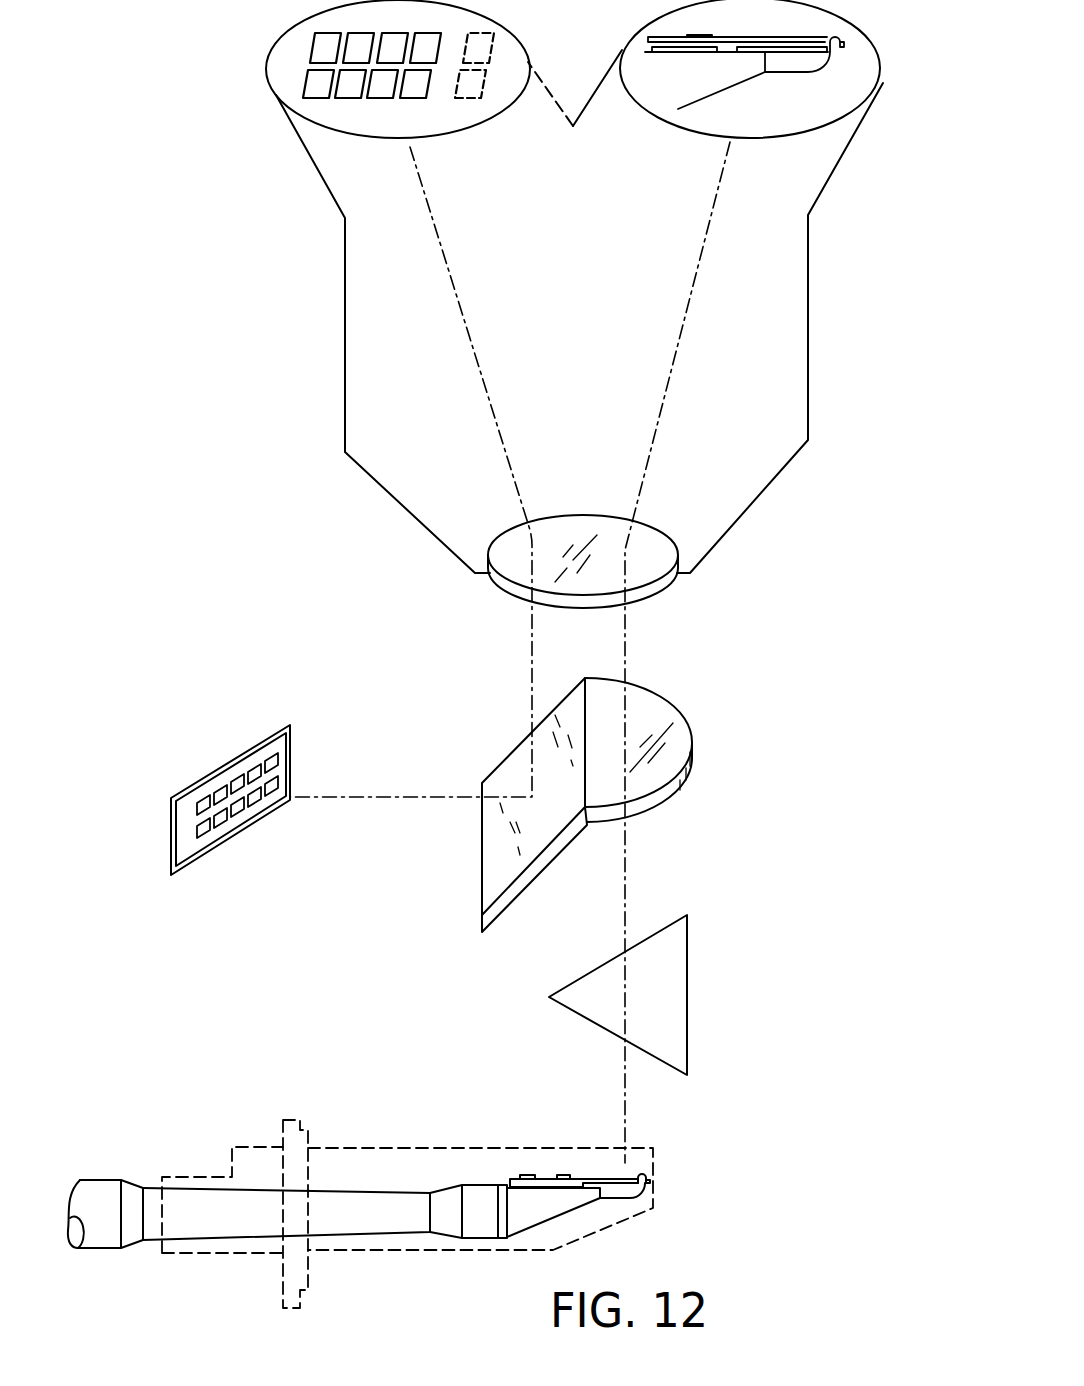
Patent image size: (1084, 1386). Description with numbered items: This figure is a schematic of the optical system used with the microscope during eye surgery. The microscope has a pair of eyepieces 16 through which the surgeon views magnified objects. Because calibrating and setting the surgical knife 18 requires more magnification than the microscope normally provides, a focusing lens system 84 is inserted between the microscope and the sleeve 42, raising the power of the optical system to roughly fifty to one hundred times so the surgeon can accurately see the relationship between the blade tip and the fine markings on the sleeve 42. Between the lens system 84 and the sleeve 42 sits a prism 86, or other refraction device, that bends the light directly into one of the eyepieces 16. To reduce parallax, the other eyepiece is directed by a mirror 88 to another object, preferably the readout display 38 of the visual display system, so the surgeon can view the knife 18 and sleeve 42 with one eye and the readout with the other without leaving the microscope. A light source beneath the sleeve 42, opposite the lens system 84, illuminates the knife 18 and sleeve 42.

The eyepieces 16 is at (268, 50).
The surgical knife 18 is at (382, 1220).
The main readout display 38 is at (188, 847).
The sleeve 42 is at (362, 1147).
The focusing lens system 84 is at (690, 723).
The prism 86 is at (673, 1008).
The mirror 88 is at (490, 858).